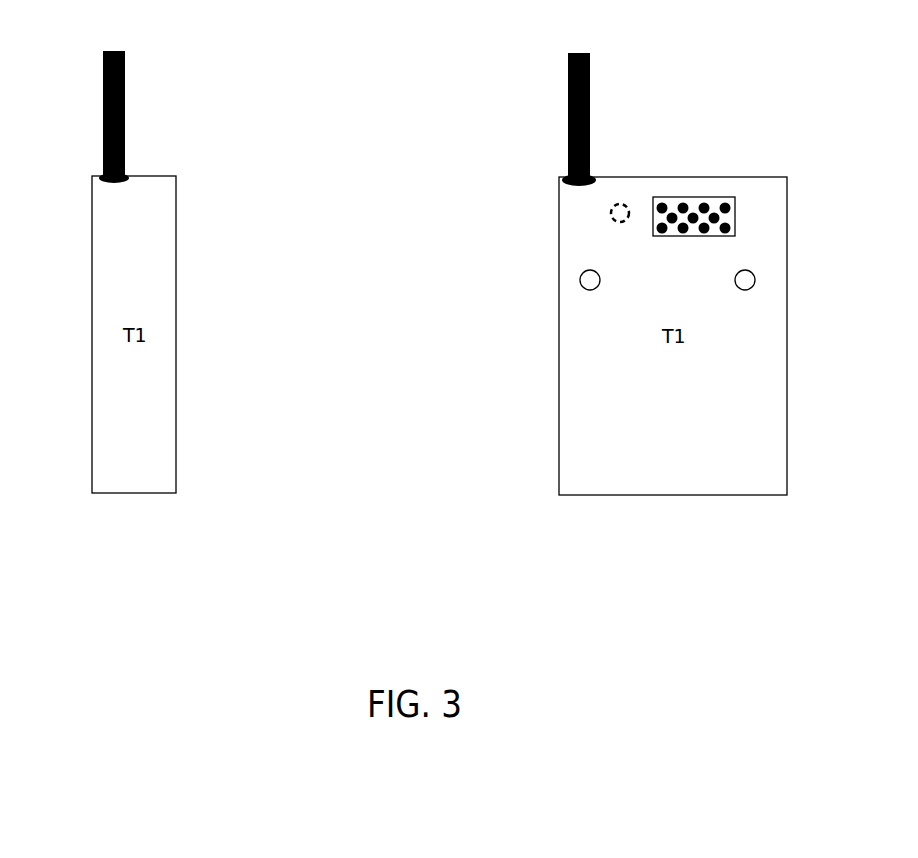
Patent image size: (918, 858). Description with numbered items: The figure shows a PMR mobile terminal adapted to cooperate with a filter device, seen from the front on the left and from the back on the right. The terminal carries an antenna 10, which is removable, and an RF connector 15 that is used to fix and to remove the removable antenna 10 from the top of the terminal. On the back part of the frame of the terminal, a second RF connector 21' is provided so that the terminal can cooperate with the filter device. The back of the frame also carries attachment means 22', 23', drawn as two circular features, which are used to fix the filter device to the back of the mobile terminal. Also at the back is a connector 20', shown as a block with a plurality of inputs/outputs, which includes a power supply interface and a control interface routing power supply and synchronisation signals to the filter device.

The antenna 10 is at (103, 106).
The RF connector 15 is at (110, 186).
The connector 20' is at (694, 180).
The second RF connector 21' is at (567, 230).
The attachment means 22' is at (546, 295).
The attachment means 23' is at (786, 270).